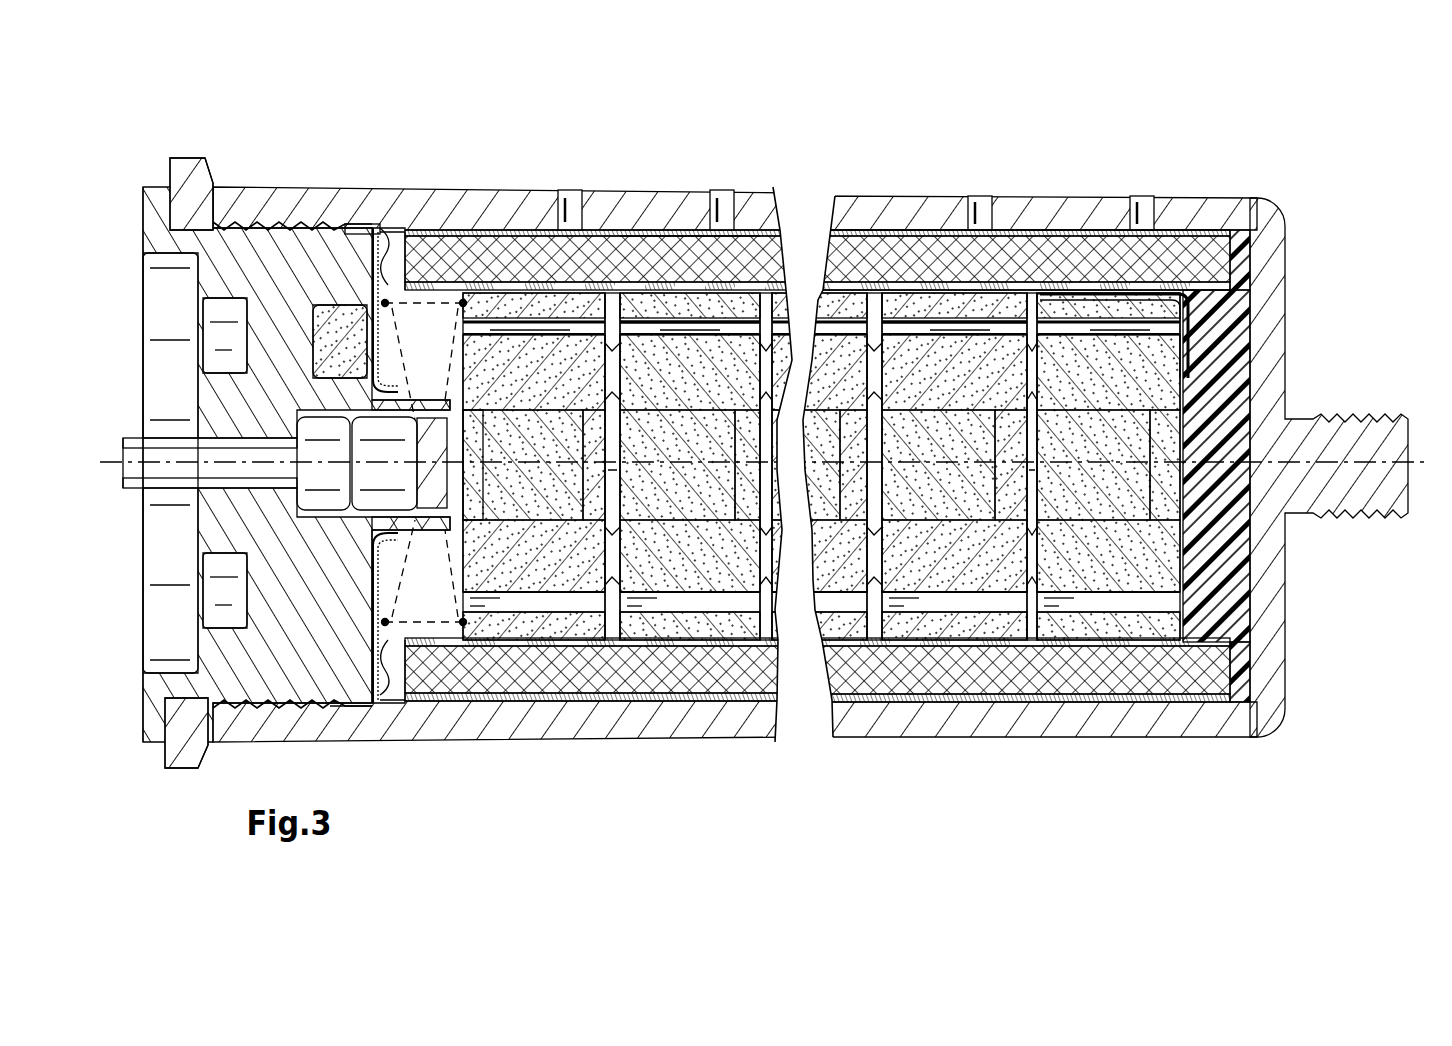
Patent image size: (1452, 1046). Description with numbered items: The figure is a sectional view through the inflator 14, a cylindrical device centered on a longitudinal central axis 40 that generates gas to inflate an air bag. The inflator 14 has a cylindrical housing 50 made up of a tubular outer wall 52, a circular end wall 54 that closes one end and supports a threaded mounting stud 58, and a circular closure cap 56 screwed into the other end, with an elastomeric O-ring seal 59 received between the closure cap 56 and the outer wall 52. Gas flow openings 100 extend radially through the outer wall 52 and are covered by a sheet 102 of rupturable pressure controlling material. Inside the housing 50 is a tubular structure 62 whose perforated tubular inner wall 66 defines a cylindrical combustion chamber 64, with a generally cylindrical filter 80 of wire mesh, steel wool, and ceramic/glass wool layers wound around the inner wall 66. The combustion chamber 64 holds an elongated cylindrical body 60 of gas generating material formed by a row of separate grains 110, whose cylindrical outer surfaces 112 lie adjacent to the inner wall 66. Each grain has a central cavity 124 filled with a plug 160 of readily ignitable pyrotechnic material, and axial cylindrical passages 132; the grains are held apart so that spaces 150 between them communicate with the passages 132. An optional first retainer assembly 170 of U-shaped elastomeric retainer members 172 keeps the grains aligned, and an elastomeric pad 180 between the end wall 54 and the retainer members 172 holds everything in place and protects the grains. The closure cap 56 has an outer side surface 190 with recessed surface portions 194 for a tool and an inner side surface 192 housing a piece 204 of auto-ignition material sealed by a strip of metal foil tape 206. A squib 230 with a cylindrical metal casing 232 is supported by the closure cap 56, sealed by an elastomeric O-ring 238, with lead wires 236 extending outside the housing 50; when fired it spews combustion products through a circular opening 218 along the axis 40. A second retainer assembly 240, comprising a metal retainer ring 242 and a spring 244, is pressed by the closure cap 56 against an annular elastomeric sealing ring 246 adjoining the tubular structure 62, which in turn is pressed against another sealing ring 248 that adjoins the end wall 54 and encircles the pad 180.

The inflator 14 is at (150, 115).
The longitudinal central axis 40 is at (150, 410).
The housing 50 is at (240, 178).
The tubular outer wall 52 is at (300, 186).
The end wall 54 is at (1270, 338).
The closure cap 56 is at (157, 245).
The threaded mounting stud 58 is at (1345, 505).
The O-ring seal 59 is at (183, 178).
The elongated cylindrical body of gas generating material 60 is at (650, 310).
The tubular structure 62 is at (662, 225).
The combustion chamber 64 is at (664, 384).
The tubular inner wall 66 is at (937, 320).
The filter 80 is at (935, 245).
The gas flow openings 100 is at (568, 190).
The sheet of rupturable pressure controlling material 102 is at (905, 215).
The grains of gas generating material 110 is at (570, 497).
The cylindrical outer surface 112 is at (548, 640).
The cavity 124 is at (487, 496).
The cylindrical passages 132 is at (455, 327).
The spaces 150 is at (612, 645).
The plug of pyrotechnic material 160 is at (821, 600).
The first retainer assembly 170 is at (1262, 300).
The retainer members 172 is at (1190, 245).
The elastomeric pad 180 is at (1232, 555).
The outer side surface 190 is at (143, 695).
The inner side surface 192 is at (373, 706).
The recessed surface portions 194 is at (225, 375).
The piece of auto-ignition material 204 is at (345, 313).
The metal foil tape 206 is at (424, 463).
The circular opening 218 is at (470, 426).
The squib 230 is at (300, 410).
The casing 232 is at (320, 437).
The lead wires 236 is at (120, 445).
The O-ring 238 is at (370, 505).
The second retainer assembly 240 is at (355, 220).
The retainer ring 242 is at (388, 215).
The spring 244 is at (415, 230).
The sealing ring 246 is at (413, 235).
The sealing ring 248 is at (1238, 290).